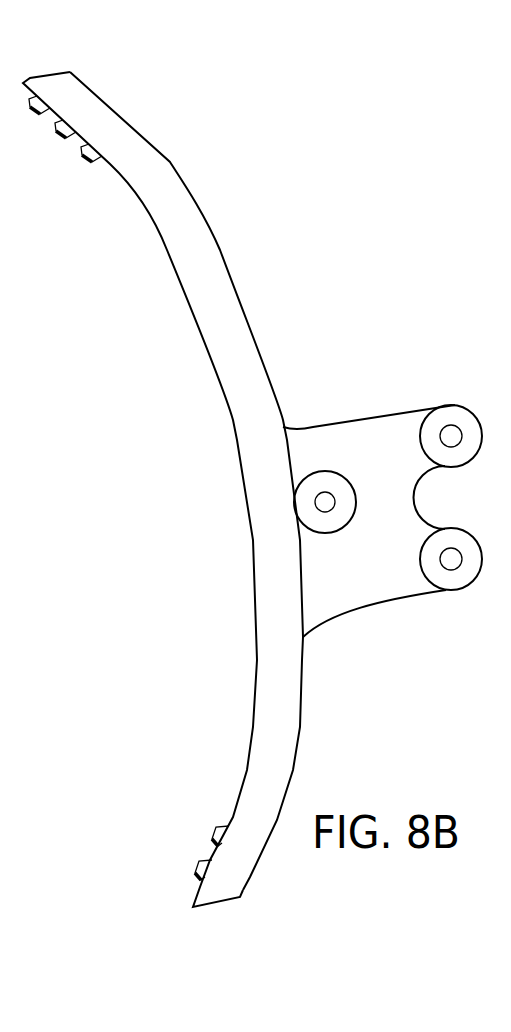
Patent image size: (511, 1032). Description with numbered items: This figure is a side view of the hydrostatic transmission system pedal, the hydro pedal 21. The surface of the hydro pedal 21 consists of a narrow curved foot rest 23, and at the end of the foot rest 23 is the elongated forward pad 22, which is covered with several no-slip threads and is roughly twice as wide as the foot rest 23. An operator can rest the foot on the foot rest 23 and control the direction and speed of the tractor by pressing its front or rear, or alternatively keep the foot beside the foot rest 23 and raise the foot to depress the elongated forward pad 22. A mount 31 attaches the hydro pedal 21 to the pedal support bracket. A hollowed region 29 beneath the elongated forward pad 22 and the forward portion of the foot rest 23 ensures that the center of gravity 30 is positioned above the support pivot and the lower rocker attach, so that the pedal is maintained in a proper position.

The hydro pedal 21 is at (190, 909).
The elongated forward pad 22 is at (108, 163).
The foot rest 23 is at (243, 482).
The hollowed region 29 is at (207, 280).
The center of gravity 30 is at (310, 493).
The mount 31 is at (393, 433).